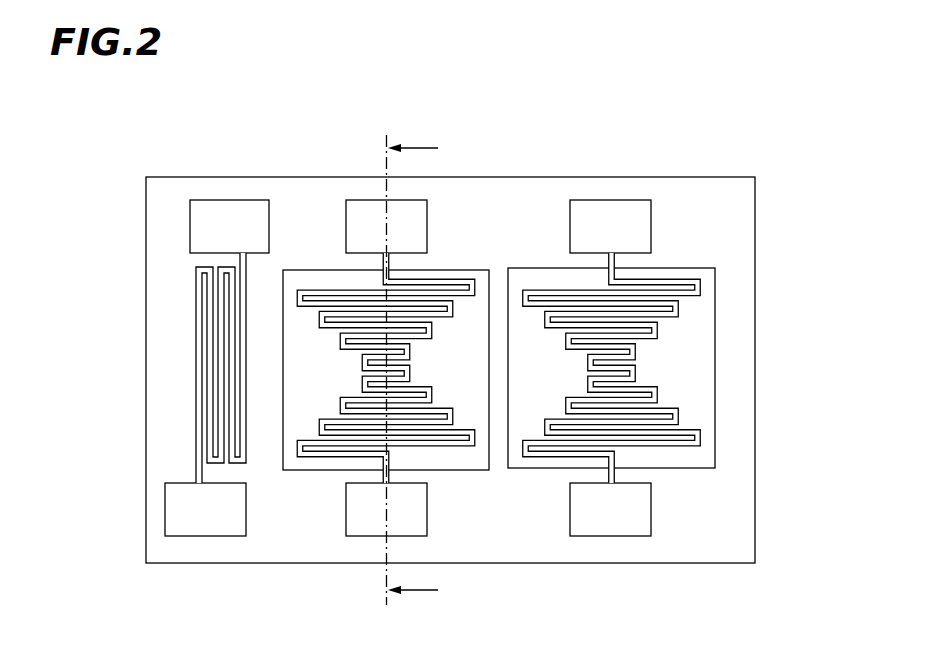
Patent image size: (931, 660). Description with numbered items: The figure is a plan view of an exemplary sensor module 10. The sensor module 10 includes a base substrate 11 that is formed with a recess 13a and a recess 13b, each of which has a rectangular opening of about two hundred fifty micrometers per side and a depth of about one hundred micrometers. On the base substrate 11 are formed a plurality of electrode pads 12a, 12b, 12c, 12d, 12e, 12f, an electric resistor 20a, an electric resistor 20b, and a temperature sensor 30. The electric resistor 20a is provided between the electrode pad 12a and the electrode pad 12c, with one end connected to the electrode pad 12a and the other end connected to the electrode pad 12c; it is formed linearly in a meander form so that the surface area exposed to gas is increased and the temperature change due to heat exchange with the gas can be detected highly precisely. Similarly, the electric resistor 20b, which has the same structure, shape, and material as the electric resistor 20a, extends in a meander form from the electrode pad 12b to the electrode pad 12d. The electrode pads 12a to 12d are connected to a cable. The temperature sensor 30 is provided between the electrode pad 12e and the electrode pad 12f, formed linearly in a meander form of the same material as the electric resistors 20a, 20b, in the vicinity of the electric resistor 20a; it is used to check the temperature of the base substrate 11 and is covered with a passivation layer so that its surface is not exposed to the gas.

The sensor module 10 is at (250, 144).
The base substrate 11 is at (146, 292).
The electrode pad 12a is at (367, 200).
The electrode pad 12b is at (652, 228).
The electrode pad 12c is at (377, 537).
The electrode pad 12d is at (652, 508).
The electrode pad 12e is at (200, 232).
The electrode pad 12f is at (173, 513).
The recess 13a is at (454, 456).
The recess 13b is at (702, 320).
The electric resistor 20a is at (323, 454).
The electric resistor 20b is at (662, 392).
The temperature sensor 30 is at (197, 363).